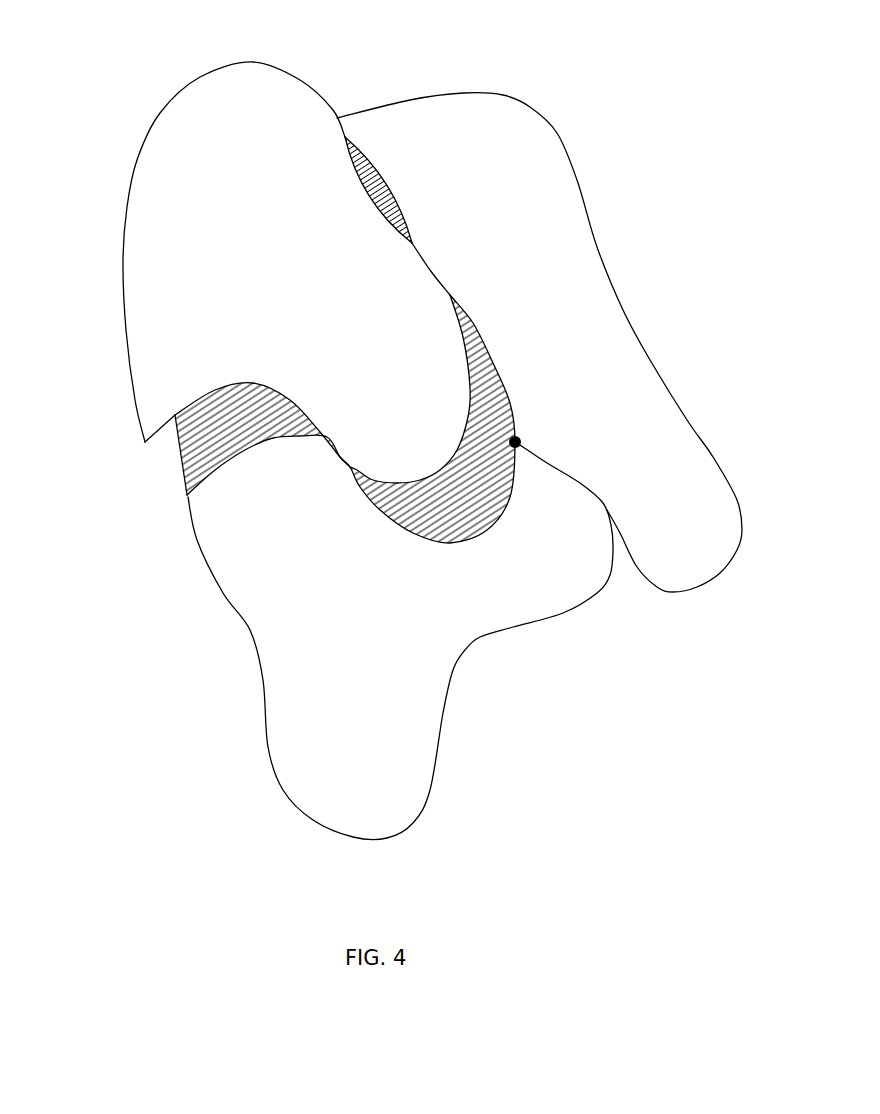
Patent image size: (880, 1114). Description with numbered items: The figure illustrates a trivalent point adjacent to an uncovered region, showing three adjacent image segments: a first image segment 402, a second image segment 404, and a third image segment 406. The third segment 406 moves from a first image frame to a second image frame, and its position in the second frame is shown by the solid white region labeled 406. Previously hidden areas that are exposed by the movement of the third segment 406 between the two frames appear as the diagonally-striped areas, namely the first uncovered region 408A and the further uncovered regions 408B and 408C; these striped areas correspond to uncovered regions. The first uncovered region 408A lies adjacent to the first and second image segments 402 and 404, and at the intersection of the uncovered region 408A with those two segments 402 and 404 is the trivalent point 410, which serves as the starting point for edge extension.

The first image segment 402 is at (539, 342).
The second image segment 404 is at (394, 567).
The third image segment 406 is at (319, 302).
The first uncovered region 408A is at (488, 345).
The uncovered region 408B is at (345, 133).
The uncovered region 408C is at (185, 468).
The trivalent point 410 is at (522, 441).